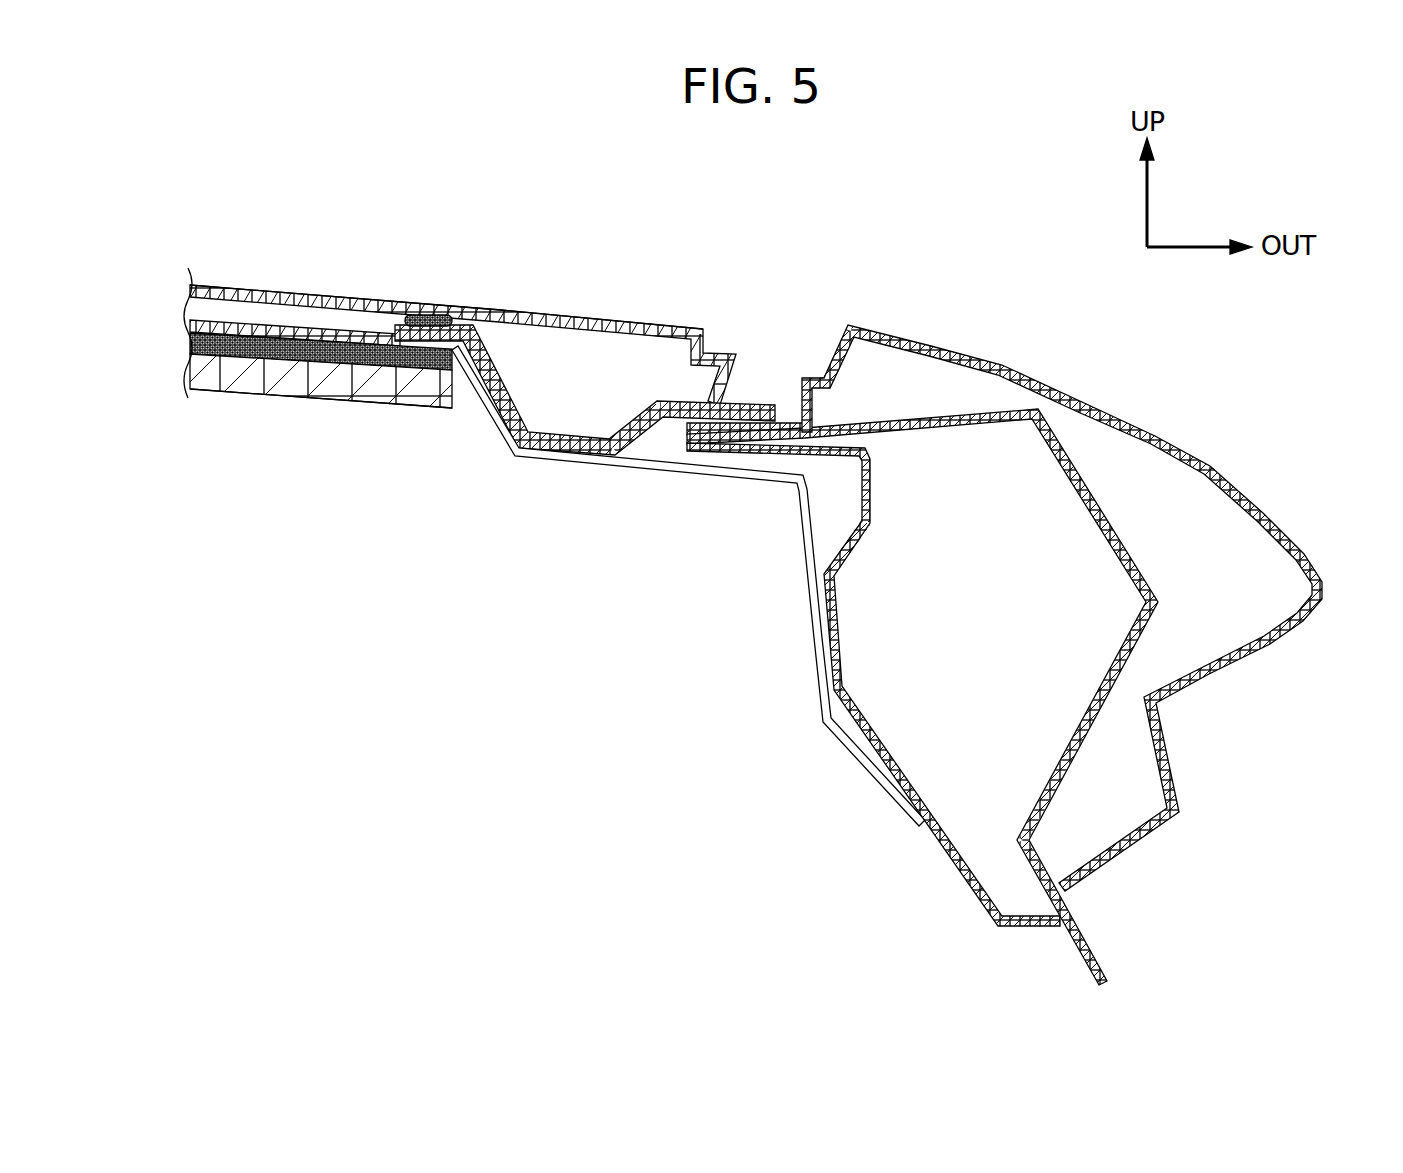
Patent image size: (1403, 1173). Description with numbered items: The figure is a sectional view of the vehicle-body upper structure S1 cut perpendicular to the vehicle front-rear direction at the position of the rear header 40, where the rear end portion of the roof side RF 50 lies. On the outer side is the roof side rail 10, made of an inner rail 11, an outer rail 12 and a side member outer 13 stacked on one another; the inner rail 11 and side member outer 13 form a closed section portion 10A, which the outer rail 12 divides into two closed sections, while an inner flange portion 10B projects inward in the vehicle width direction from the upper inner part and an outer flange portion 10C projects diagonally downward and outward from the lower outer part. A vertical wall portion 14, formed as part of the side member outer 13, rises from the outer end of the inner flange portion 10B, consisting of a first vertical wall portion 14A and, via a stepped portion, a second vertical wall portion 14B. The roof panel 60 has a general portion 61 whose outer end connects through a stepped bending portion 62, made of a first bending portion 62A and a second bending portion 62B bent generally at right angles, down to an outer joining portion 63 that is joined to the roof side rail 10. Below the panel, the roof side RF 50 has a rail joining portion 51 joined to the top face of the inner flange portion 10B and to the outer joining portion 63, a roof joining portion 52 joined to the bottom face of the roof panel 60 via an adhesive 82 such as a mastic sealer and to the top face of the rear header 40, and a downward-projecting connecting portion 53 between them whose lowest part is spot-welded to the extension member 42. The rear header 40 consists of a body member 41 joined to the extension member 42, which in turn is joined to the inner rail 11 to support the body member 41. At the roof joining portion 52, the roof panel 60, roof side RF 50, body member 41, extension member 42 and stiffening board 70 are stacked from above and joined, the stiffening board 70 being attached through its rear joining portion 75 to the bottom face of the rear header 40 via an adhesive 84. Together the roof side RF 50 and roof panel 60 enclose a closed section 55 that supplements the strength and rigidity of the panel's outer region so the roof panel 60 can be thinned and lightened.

The roof side rail 10 is at (1004, 609).
The closed section portion 10A is at (1034, 373).
The inner flange portion 10B is at (742, 455).
The outer flange portion 10C is at (1112, 942).
The inner rail 11 is at (940, 852).
The outer rail 12 is at (1100, 537).
The side member outer 13 is at (1210, 468).
The vertical wall portion 14 is at (871, 332).
The first vertical wall portion 14A is at (814, 420).
The second vertical wall portion 14B is at (829, 360).
The rear header 40 is at (688, 586).
The body member 41 is at (267, 325).
The extension member 42 is at (817, 652).
The roof side RF 50 is at (596, 402).
The rail joining portion 51 is at (768, 440).
The roof joining portion 52 is at (455, 333).
The connecting portion 53 is at (538, 456).
The closed section 55 is at (567, 396).
The roof panel 60 is at (506, 306).
The general portion 61 is at (220, 285).
The bending portion 62 is at (748, 307).
The first bending portion 62A is at (699, 332).
The second bending portion 62B is at (753, 331).
The outer joining portion 63 is at (750, 400).
The stiffening board 70 is at (321, 423).
The rear joining portion 75 is at (302, 400).
The adhesive 82 is at (432, 313).
The adhesive 84 is at (243, 350).
The vehicle-body upper structure S1 is at (958, 200).